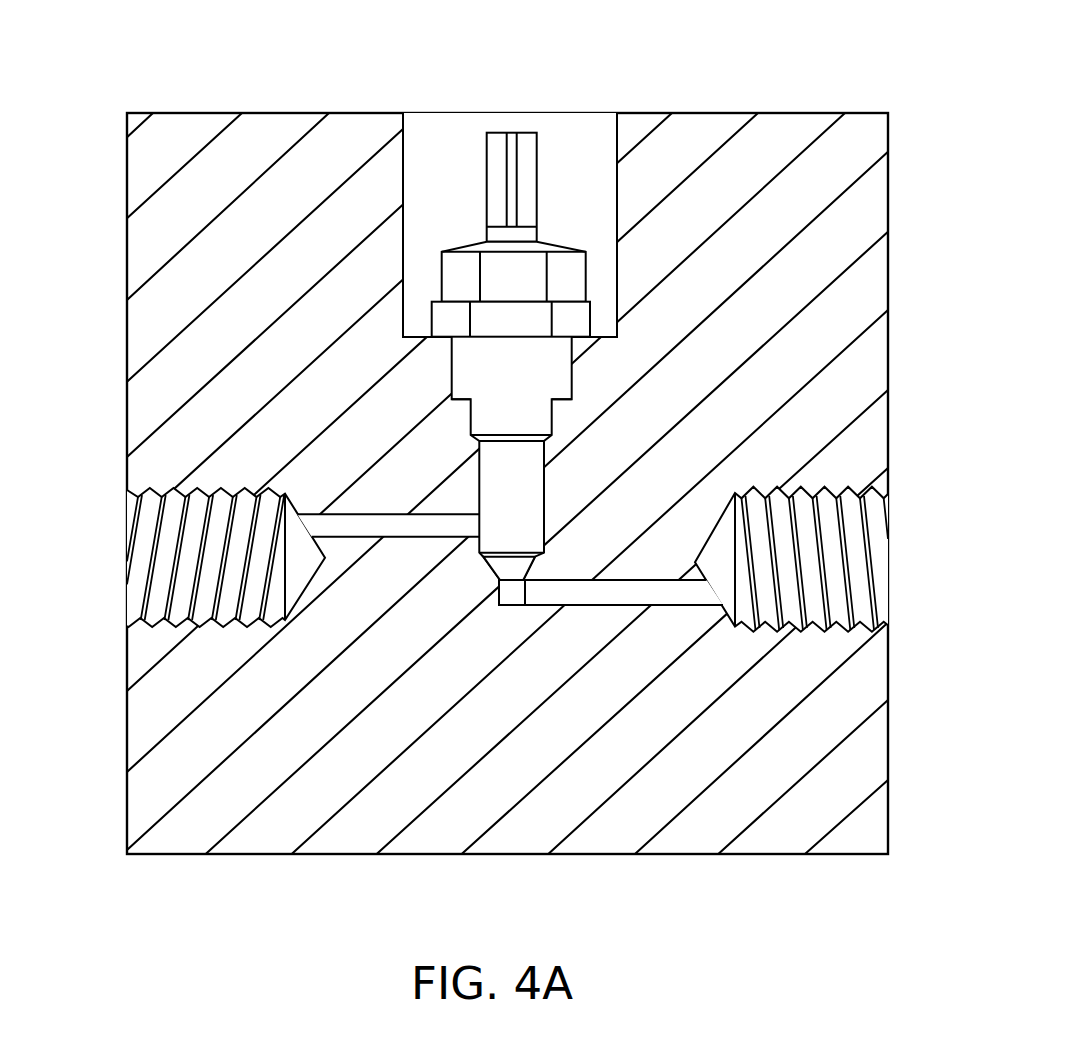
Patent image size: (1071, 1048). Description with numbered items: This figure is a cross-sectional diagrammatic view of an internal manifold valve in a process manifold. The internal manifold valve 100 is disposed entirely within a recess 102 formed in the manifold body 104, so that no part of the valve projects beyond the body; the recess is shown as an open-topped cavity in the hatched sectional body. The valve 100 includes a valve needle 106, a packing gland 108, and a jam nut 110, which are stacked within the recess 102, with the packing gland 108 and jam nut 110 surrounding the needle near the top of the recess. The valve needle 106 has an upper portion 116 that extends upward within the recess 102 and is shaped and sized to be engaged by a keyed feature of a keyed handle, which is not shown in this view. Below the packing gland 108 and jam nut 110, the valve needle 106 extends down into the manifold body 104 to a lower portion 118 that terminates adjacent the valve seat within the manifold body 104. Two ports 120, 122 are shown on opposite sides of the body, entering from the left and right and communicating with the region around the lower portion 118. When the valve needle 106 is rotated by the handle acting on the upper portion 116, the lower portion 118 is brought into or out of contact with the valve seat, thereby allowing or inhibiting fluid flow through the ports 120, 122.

The internal manifold valve 100 is at (463, 228).
The recess 102 is at (617, 138).
The manifold body 104 is at (792, 112).
The valve needle 106 is at (485, 153).
The packing gland 108 is at (575, 280).
The jam nut 110 is at (571, 319).
The upper portion of valve needle 116 is at (521, 129).
The lower portion of valve needle 118 is at (490, 572).
The port 120 is at (162, 567).
The port 122 is at (880, 569).